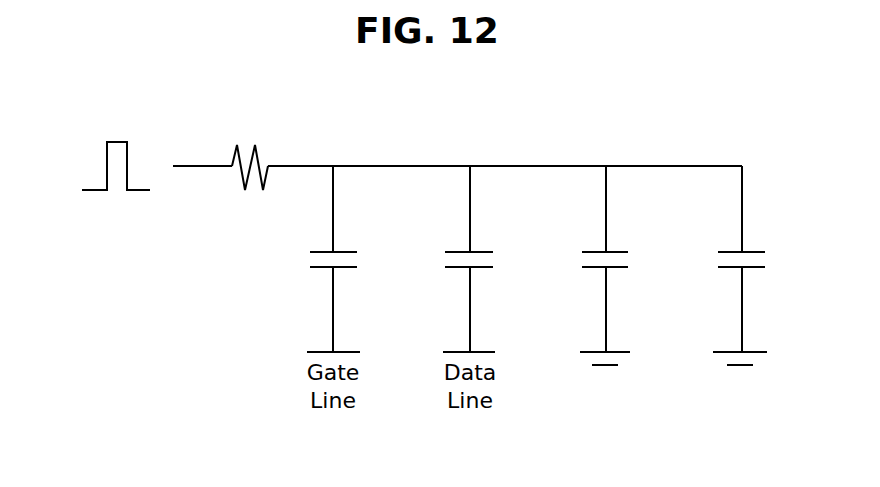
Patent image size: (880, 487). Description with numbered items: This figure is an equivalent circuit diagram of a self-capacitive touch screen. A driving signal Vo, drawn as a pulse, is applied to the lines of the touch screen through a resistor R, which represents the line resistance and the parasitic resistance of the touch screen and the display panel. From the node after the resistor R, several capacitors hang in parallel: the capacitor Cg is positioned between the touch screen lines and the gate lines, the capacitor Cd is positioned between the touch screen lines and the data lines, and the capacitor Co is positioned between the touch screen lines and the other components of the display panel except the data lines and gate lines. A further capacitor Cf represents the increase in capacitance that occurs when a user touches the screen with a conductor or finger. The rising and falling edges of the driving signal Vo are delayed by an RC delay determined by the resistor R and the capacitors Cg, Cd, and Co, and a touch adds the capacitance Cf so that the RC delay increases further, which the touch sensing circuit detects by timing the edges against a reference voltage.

The driving signal Vo is at (112, 161).
The resistor R is at (250, 156).
The capacitor Cg is at (347, 259).
The capacitor Cd is at (483, 259).
The capacitor Co is at (618, 265).
The touch capacitance Cf is at (750, 265).